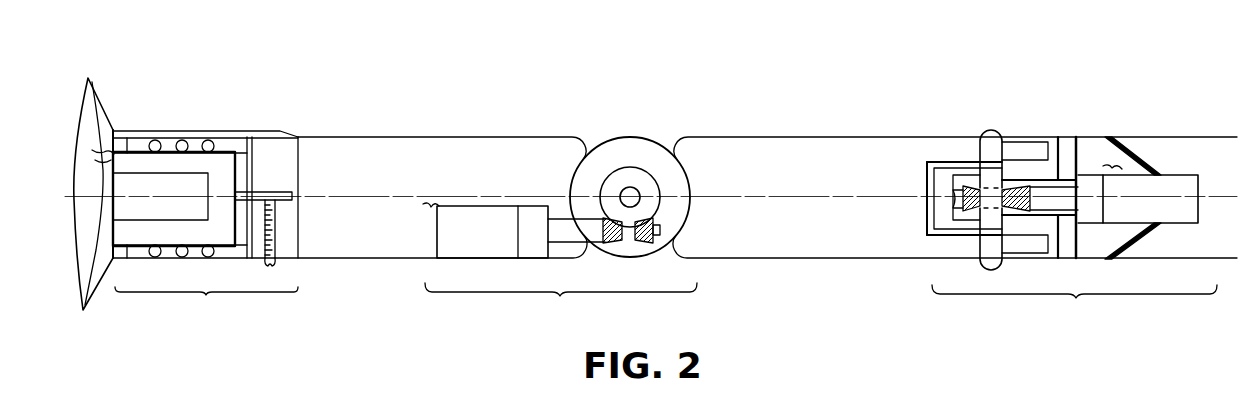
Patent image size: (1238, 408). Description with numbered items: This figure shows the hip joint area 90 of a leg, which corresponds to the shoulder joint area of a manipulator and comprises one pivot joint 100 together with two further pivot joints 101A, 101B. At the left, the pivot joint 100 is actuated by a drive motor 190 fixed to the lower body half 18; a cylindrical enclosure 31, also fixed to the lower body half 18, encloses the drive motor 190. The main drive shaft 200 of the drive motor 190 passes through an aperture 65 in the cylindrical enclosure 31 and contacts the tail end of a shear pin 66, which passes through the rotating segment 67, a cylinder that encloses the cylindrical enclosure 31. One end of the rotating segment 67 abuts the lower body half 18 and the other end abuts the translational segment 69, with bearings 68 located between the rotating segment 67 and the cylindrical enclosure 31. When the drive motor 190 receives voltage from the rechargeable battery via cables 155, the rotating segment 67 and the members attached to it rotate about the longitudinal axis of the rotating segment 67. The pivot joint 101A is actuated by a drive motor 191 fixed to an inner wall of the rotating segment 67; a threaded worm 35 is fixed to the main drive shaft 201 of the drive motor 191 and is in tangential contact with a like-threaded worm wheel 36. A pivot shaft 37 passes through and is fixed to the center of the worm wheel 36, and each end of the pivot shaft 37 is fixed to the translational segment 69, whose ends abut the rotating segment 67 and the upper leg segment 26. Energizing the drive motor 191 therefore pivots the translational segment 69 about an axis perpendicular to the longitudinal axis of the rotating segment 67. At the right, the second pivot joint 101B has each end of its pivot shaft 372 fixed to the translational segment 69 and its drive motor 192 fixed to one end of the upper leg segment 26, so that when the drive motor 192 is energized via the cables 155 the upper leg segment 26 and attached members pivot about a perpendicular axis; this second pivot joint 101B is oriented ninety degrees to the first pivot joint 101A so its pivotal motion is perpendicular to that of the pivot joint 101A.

The lower body half 18 is at (108, 108).
The upper leg segment 26 is at (1170, 137).
The cylindrical enclosure 31 is at (222, 153).
The threaded worm 35 is at (628, 238).
The worm wheel 36 is at (647, 185).
The pivot shaft 37 is at (642, 203).
The aperture 65 is at (252, 188).
The shear pin 66 is at (275, 235).
The rotating segment 67 is at (437, 137).
The bearings 68 is at (213, 257).
The translational segment 69 is at (847, 248).
The hip joint area 90 is at (668, 118).
The pivot joint 100 is at (206, 309).
The pivot joint 101A is at (561, 305).
The second pivot joint 101B is at (1074, 309).
The cables 155 is at (95, 150).
The drive motor 190 is at (175, 215).
The drive motor 191 is at (437, 228).
The drive motor 192 is at (1172, 215).
The main drive shaft 200 is at (275, 190).
The main drive shaft 201 is at (568, 240).
The pivot shaft 372 is at (990, 130).